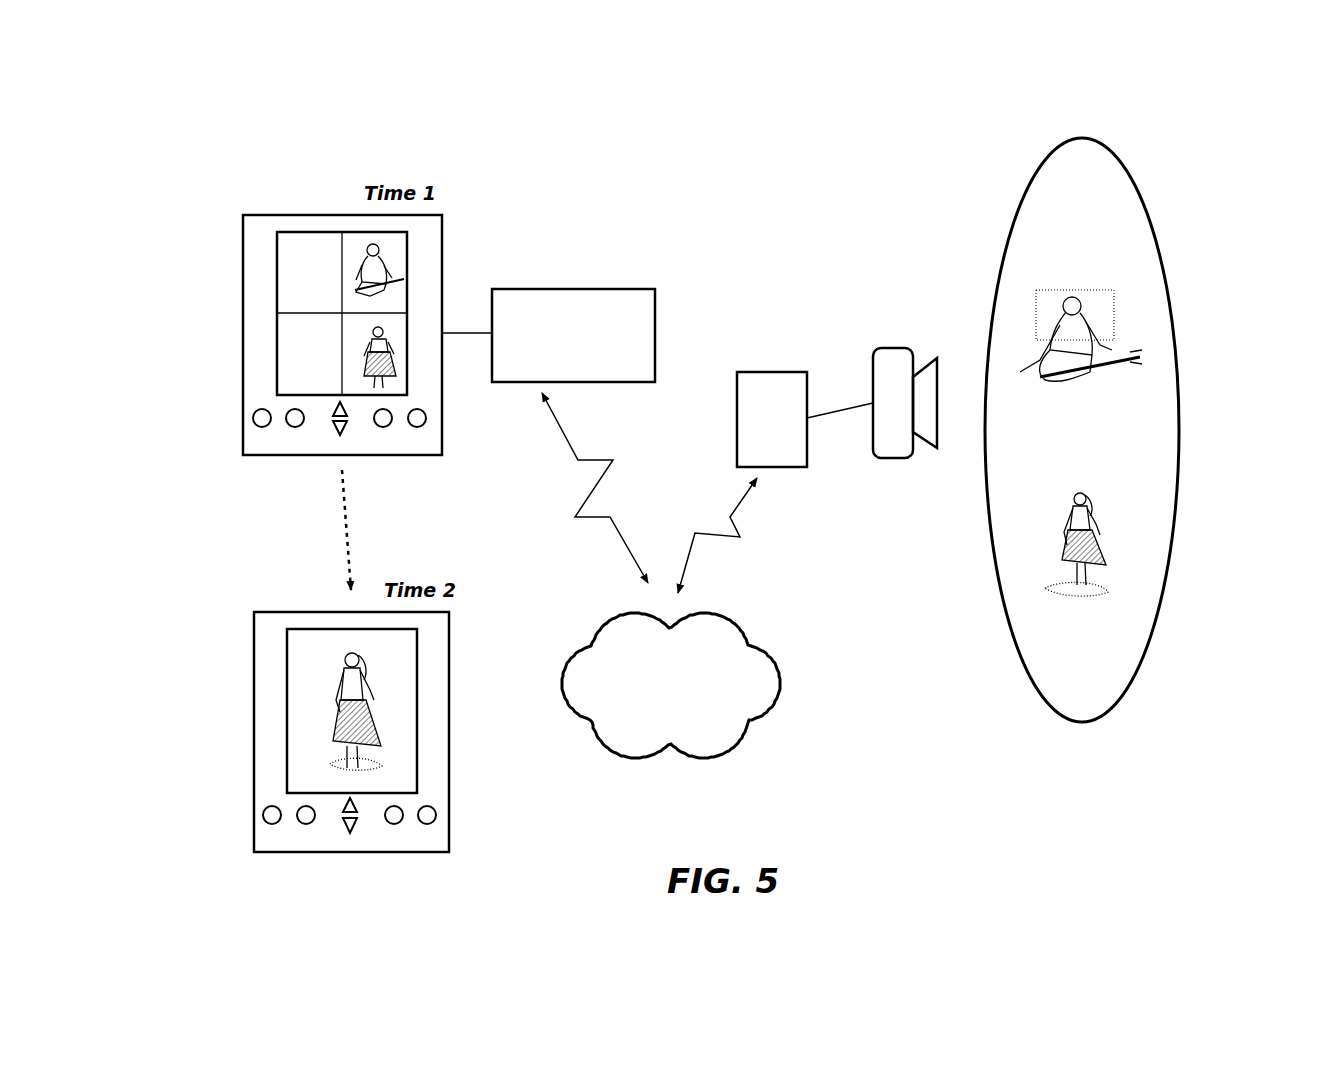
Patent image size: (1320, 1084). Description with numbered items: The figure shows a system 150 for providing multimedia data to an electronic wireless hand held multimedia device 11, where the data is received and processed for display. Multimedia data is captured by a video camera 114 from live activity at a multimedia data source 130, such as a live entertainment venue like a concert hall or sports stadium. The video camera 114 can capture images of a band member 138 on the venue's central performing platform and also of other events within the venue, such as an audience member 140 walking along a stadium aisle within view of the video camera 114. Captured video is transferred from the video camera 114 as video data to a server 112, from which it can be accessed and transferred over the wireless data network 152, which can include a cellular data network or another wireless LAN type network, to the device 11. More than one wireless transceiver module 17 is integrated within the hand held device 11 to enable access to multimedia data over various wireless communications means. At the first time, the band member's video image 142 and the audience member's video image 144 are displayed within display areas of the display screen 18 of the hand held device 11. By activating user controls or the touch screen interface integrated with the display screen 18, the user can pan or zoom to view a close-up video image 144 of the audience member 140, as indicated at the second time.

The wireless handheld device 11 is at (246, 294).
The wireless transceiver module 17 is at (533, 289).
The display screen 18 is at (307, 232).
The server 112 is at (775, 372).
The video camera 114 is at (905, 348).
The multimedia data source 130 is at (1038, 164).
The band member 138 is at (1150, 306).
The audience member 140 is at (1122, 547).
The video image 142 is at (412, 256).
The video image 144 is at (402, 359).
The system 150 is at (708, 227).
The data network 152 is at (612, 623).